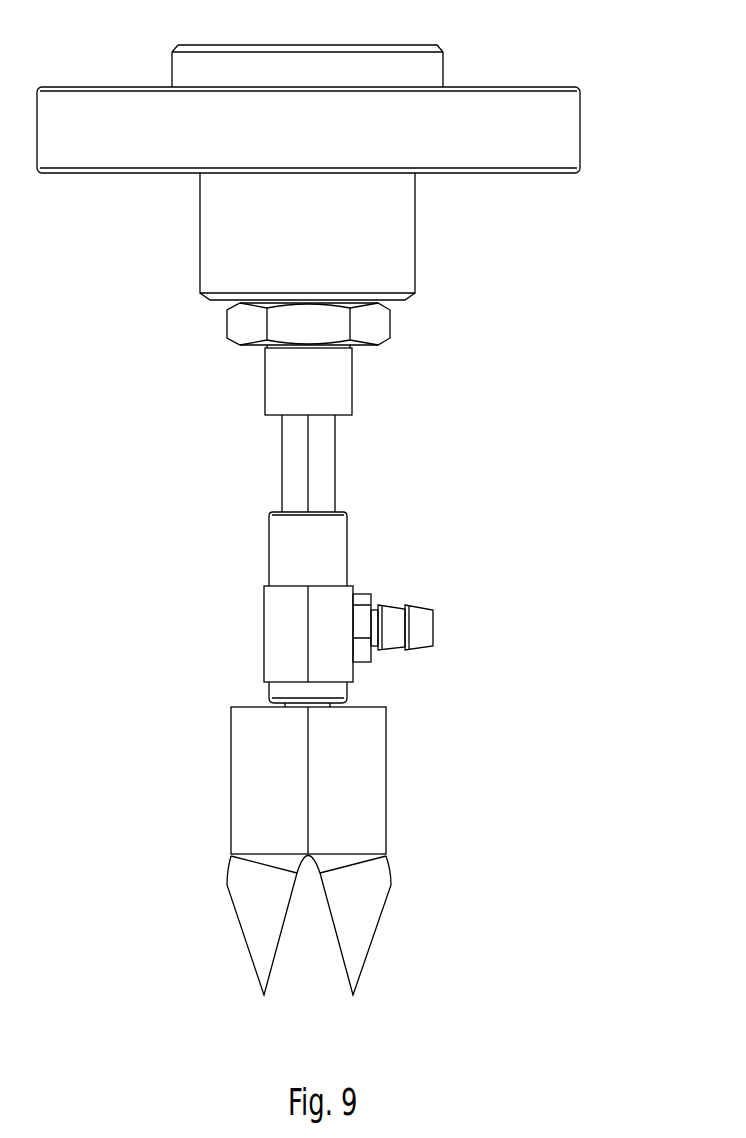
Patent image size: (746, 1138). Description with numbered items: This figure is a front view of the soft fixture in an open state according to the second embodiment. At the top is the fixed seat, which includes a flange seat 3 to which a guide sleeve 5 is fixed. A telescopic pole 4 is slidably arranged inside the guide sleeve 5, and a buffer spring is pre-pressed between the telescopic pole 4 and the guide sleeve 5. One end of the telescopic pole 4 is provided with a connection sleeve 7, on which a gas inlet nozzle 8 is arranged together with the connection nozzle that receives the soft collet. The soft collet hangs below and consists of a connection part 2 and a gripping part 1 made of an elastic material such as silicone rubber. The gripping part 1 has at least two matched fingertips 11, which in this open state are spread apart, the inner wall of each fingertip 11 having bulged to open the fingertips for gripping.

The gripping part 1 is at (371, 841).
The connection part 2 is at (373, 765).
The flange seat 3 is at (477, 128).
The telescopic pole 4 is at (327, 460).
The guide sleeve 5 is at (342, 393).
The connection sleeve 7 is at (321, 556).
The gas inlet nozzle 8 is at (426, 636).
The fingertips 11 is at (360, 943).